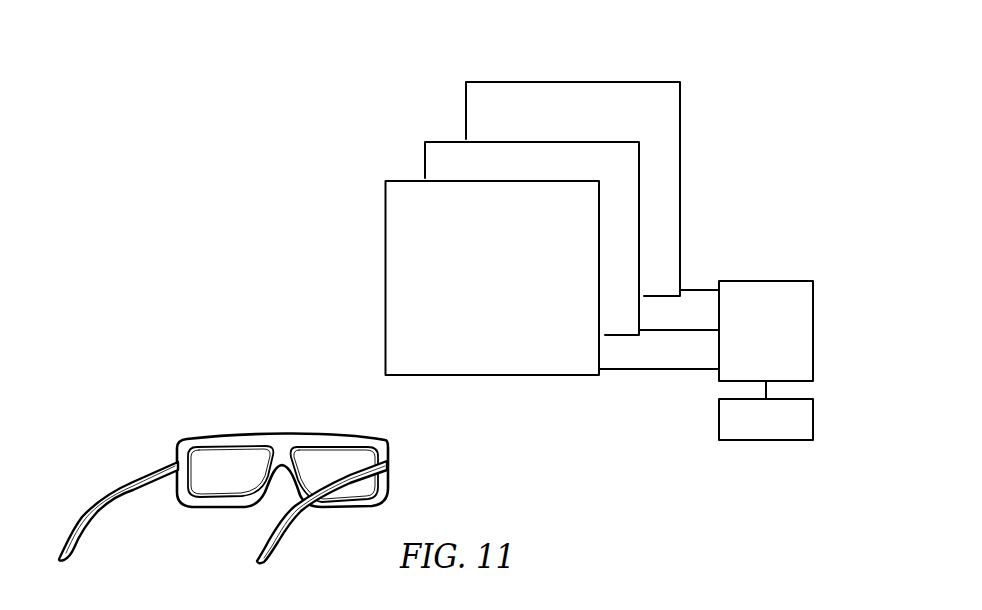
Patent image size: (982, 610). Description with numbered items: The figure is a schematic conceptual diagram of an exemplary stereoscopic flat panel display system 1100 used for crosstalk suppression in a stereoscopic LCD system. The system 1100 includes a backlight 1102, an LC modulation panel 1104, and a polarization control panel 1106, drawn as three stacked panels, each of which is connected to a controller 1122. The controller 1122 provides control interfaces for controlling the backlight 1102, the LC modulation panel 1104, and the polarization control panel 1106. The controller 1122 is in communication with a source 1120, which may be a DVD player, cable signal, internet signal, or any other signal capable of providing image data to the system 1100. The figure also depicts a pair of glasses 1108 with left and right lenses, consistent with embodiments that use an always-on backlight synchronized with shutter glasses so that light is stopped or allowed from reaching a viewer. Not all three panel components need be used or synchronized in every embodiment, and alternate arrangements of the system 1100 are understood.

The stereoscopic flat panel display system 1100 is at (292, 128).
The backlight 1102 is at (487, 80).
The LC modulation panel 1104 is at (447, 140).
The polarization control panel 1106 is at (405, 180).
The 3D viewing glasses 1108 is at (298, 517).
The source 1120 is at (789, 441).
The controller 1122 is at (789, 280).